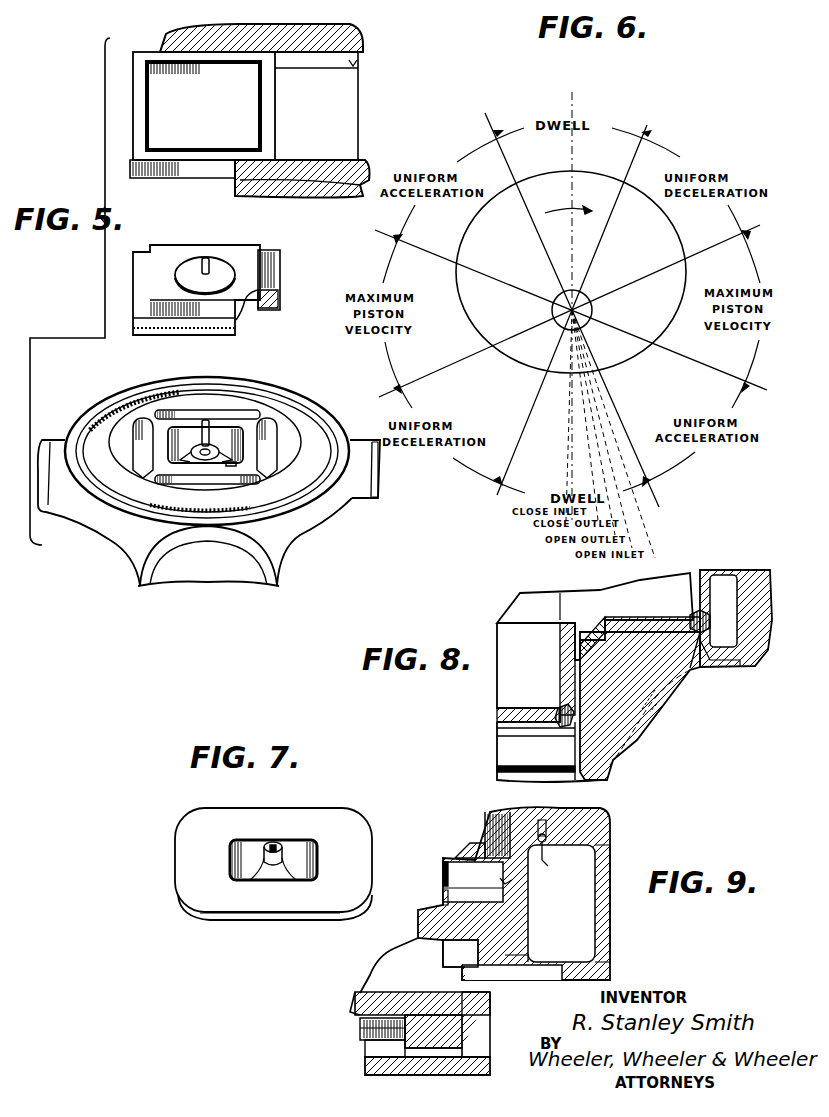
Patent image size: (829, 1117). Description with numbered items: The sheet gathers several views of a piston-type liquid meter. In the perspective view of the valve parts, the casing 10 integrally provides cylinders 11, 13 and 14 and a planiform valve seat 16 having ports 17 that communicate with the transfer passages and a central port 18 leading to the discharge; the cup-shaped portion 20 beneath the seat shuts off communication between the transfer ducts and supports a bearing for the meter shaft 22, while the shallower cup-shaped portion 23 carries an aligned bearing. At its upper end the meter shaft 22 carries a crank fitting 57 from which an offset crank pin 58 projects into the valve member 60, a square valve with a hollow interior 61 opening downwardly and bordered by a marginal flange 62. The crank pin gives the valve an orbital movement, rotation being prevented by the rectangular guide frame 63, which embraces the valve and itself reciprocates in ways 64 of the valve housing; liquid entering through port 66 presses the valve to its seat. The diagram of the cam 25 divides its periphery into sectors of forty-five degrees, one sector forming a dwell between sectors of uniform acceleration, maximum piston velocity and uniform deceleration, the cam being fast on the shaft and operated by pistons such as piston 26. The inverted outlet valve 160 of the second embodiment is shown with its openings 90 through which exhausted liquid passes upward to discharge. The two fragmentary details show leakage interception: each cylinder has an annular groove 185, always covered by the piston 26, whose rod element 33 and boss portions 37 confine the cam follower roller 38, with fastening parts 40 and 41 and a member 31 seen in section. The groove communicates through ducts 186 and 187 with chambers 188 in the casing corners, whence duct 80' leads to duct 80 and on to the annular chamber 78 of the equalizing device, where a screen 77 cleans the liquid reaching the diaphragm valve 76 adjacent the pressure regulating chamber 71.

In FIG. 5, the casing 10 is at (345, 510).
In FIG. 8, the casing 10 is at (632, 792).
In FIG. 9, the casing 10 is at (514, 893).
In FIG. 5, the cylinder 11 is at (40, 445).
In FIG. 5, the cylinder 13 is at (372, 478).
In FIG. 5, the cylinder 14 is at (204, 560).
In FIG. 5, the planiform valve seat 16 is at (288, 438).
In FIG. 5, the ports 17 is at (240, 415).
In FIG. 5, the central port 18 is at (183, 432).
In FIG. 5, the cup-shaped portion 20 is at (234, 466).
In FIG. 5, the meter shaft 22 is at (228, 455).
In FIG. 6, the meter shaft 22 is at (588, 310).
In FIG. 9, the cup-shaped portion 23 is at (443, 960).
In FIG. 6, the cam 25 is at (655, 246).
In FIG. 9, the cam 25 is at (465, 850).
In FIG. 8, the piston 26 is at (690, 578).
In FIG. 9, the seal ring 31 is at (443, 900).
In FIG. 9, the rod element 33 is at (443, 878).
In FIG. 9, the boss portions 37 is at (505, 880).
In FIG. 9, the cam follower roller 38 is at (490, 830).
In FIG. 8, the bolt nut 40 is at (700, 633).
In FIG. 8, the bolt 41 is at (706, 618).
In FIG. 5, the crank fitting 57 is at (150, 455).
In FIG. 5, the crank pin 58 is at (207, 422).
In FIG. 5, the valve member 60 is at (238, 258).
In FIG. 5, the hollow interior 61 is at (250, 300).
In FIG. 5, the marginal flange 62 is at (140, 288).
In FIG. 5, the rectangular guide frame 63 is at (268, 128).
In FIG. 5, the ways 64 is at (342, 160).
In FIG. 5, the port 66 is at (206, 257).
In FIG. 9, the pressure regulating chamber 71 is at (362, 1015).
In FIG. 9, the diaphragm valve 76 is at (372, 992).
In FIG. 9, the screen 77 is at (372, 1036).
In FIG. 9, the annular chamber 78 is at (380, 1050).
In FIG. 9, the duct 80 is at (451, 1033).
In FIG. 9, the duct 80' is at (531, 942).
In FIG. 7, the openings 90 is at (230, 860).
In FIG. 7, the valve 160 is at (355, 871).
In FIG. 8, the annular groove 185 is at (620, 625).
In FIG. 8, the duct 186 is at (600, 630).
In FIG. 9, the duct 186 is at (545, 832).
In FIG. 8, the duct 187 is at (566, 640).
In FIG. 9, the duct 187 is at (542, 860).
In FIG. 8, the chambers 188 is at (672, 682).
In FIG. 9, the chambers 188 is at (585, 925).